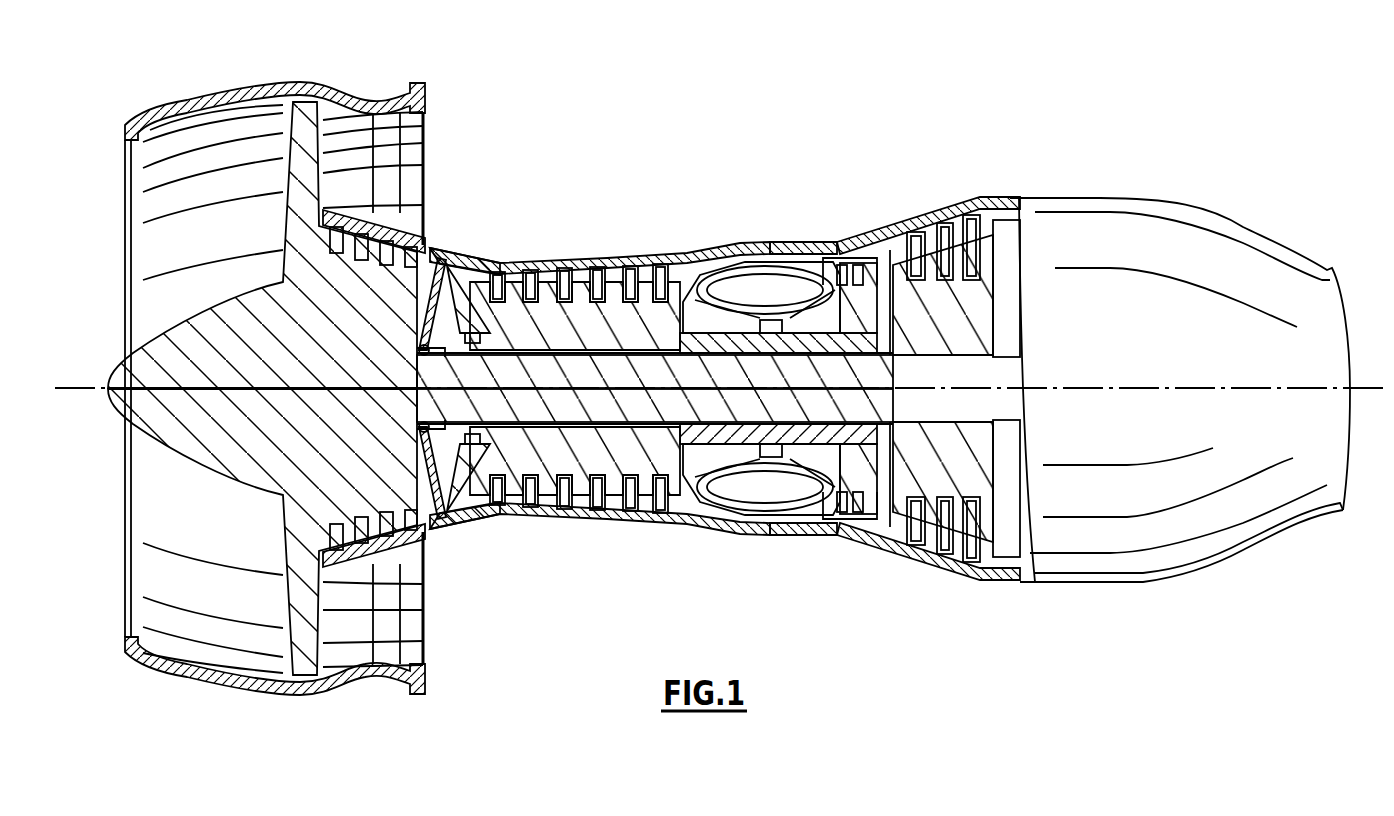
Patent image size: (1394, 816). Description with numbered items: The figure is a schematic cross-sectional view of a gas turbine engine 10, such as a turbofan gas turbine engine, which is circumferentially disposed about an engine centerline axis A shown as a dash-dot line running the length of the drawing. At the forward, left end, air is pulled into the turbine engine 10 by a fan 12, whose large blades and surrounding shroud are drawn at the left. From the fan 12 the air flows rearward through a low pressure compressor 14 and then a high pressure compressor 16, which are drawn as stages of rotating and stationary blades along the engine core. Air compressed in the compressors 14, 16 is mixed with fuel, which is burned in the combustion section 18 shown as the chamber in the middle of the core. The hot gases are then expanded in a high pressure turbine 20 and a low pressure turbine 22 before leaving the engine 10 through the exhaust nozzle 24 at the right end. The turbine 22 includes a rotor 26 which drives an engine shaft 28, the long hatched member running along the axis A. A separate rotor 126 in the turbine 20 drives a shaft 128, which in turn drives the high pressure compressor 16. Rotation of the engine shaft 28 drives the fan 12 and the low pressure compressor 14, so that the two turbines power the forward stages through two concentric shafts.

The gas turbine engine 10 is at (736, 193).
The fan 12 is at (304, 598).
The low pressure compressor 14 is at (432, 500).
The high pressure compressor 16 is at (571, 462).
The combustion section 18 is at (787, 503).
The high pressure turbine 20 is at (860, 480).
The low pressure turbine 22 is at (953, 538).
The exhaust nozzle 24 is at (1185, 333).
The rotor 26 is at (987, 527).
The engine shaft 28 is at (657, 405).
The rotor 126 is at (855, 307).
The shaft 128 is at (653, 325).
The engine centerline axis A is at (1360, 392).